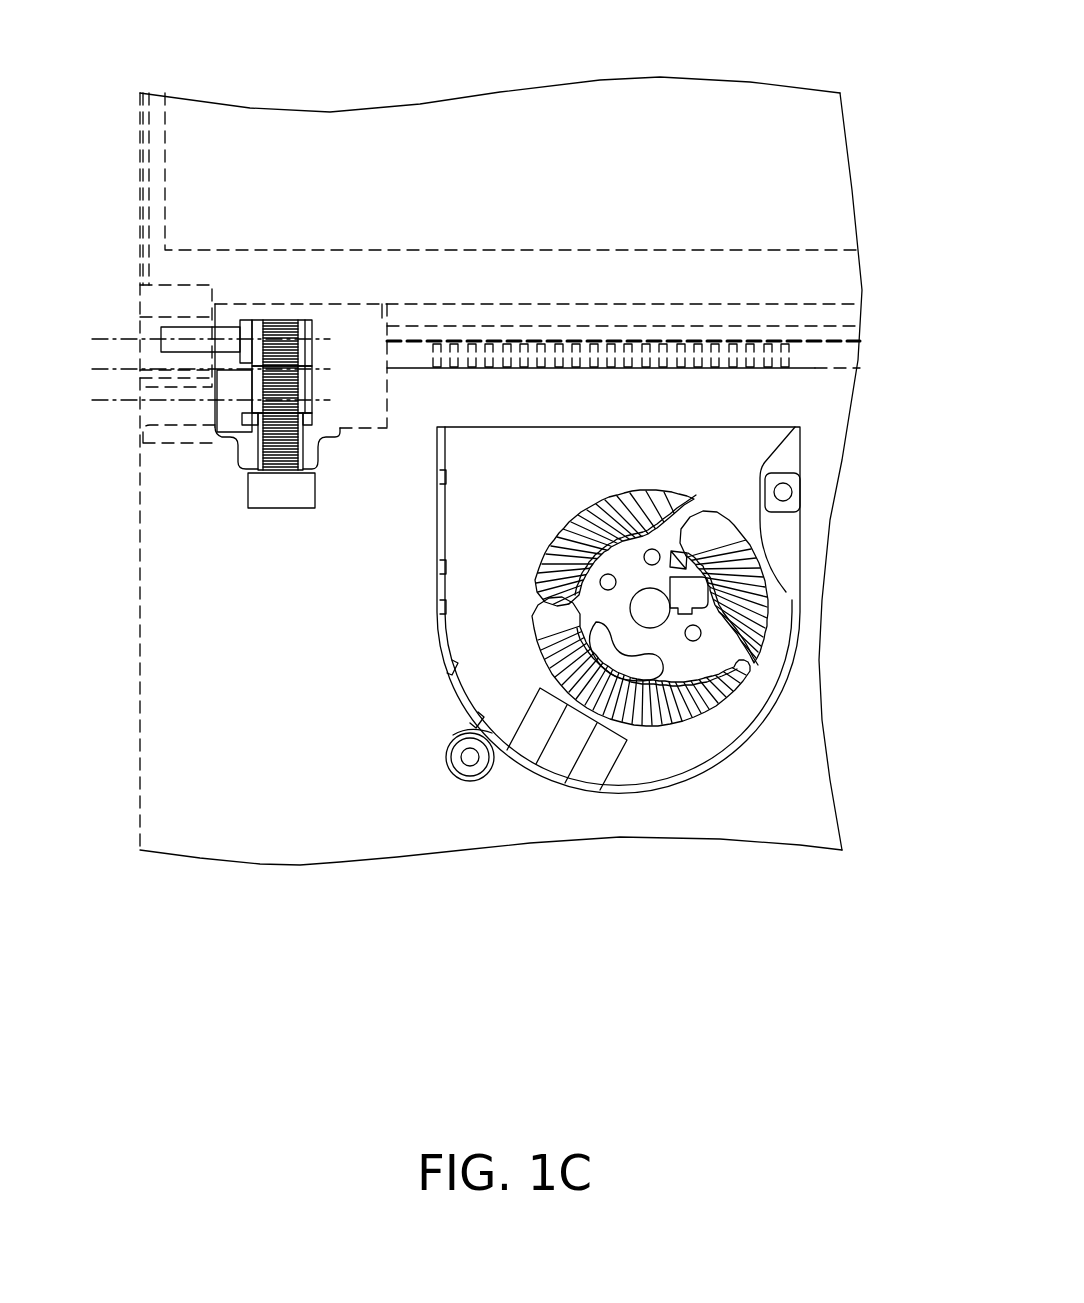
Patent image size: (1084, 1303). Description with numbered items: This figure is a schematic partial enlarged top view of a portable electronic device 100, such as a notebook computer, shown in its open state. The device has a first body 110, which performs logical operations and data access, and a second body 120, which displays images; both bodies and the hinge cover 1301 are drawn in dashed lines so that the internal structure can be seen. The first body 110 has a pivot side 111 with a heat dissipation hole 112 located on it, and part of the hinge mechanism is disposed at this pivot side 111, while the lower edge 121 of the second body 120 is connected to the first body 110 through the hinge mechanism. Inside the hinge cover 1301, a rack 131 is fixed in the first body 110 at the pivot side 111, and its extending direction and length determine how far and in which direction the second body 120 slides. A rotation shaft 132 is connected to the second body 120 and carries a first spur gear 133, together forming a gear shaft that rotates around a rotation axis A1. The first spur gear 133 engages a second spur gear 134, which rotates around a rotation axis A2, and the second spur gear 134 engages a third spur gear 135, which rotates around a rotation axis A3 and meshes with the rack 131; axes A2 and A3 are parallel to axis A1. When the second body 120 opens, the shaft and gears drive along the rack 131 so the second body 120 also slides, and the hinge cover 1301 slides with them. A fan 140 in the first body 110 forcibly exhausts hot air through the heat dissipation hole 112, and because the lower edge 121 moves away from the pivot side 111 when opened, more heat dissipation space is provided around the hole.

The portable electronic device 100 is at (914, 1065).
The first body 110 is at (838, 417).
The pivot side 111 is at (837, 356).
The heat dissipation hole 112 is at (559, 335).
The second body 120 is at (833, 131).
The lower edge 121 is at (140, 298).
The rack 131 is at (279, 454).
The rotation shaft 132 is at (190, 333).
The first spur gear 133 is at (283, 335).
The second spur gear 134 is at (290, 367).
The third spur gear 135 is at (278, 409).
The hinge cover 1301 is at (378, 302).
The fan 140 is at (529, 806).
The rotation axis A1 is at (191, 340).
The rotation axis A2 is at (191, 370).
The rotation axis A3 is at (191, 401).